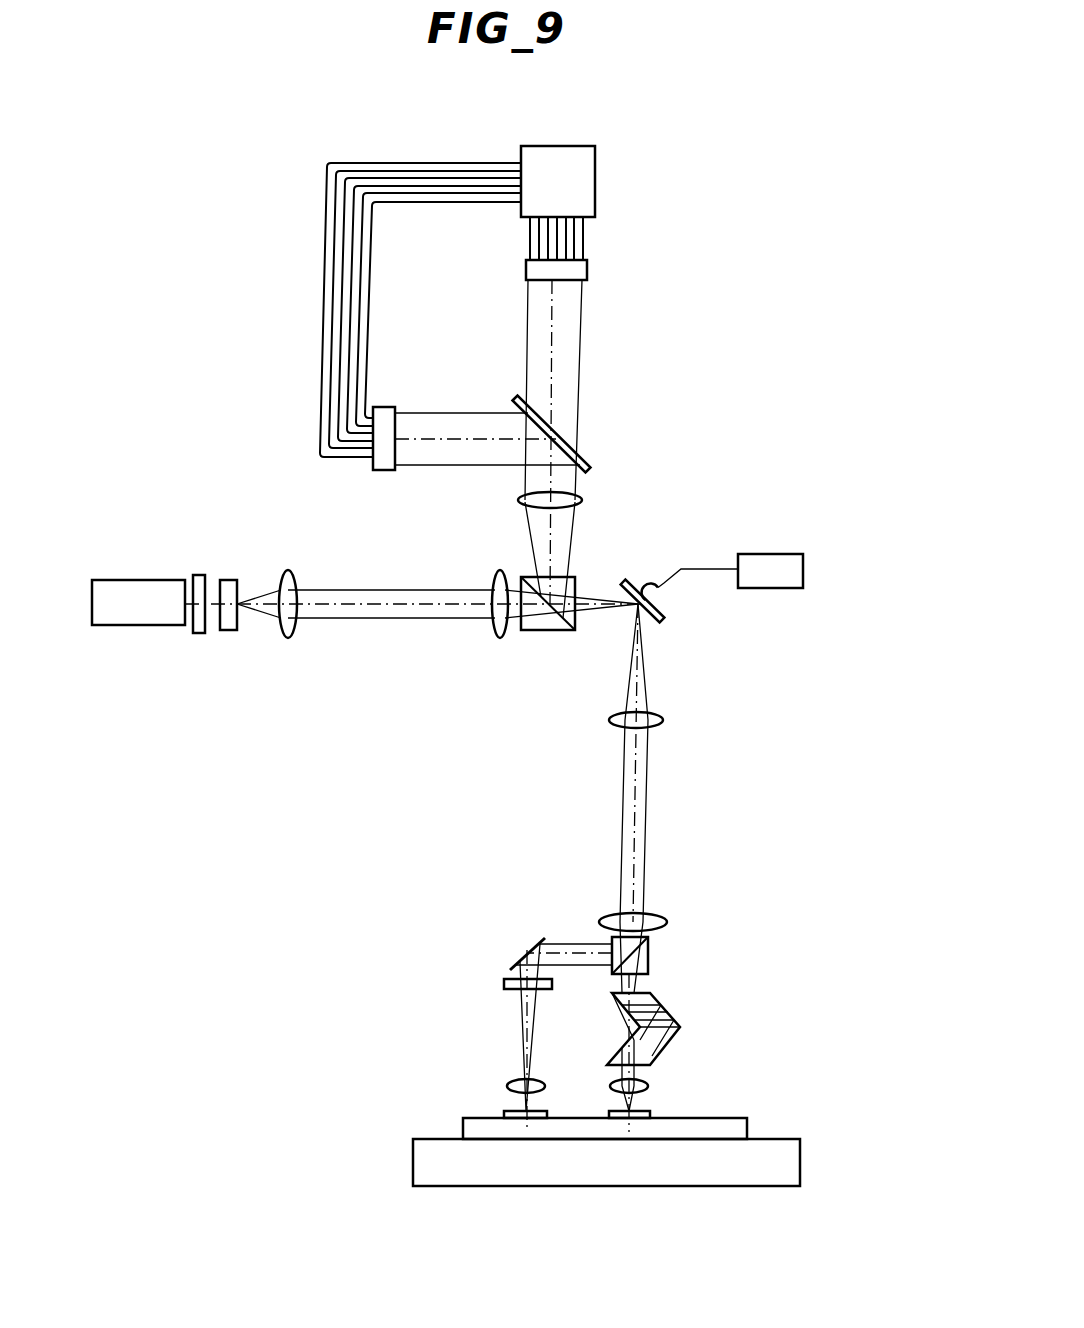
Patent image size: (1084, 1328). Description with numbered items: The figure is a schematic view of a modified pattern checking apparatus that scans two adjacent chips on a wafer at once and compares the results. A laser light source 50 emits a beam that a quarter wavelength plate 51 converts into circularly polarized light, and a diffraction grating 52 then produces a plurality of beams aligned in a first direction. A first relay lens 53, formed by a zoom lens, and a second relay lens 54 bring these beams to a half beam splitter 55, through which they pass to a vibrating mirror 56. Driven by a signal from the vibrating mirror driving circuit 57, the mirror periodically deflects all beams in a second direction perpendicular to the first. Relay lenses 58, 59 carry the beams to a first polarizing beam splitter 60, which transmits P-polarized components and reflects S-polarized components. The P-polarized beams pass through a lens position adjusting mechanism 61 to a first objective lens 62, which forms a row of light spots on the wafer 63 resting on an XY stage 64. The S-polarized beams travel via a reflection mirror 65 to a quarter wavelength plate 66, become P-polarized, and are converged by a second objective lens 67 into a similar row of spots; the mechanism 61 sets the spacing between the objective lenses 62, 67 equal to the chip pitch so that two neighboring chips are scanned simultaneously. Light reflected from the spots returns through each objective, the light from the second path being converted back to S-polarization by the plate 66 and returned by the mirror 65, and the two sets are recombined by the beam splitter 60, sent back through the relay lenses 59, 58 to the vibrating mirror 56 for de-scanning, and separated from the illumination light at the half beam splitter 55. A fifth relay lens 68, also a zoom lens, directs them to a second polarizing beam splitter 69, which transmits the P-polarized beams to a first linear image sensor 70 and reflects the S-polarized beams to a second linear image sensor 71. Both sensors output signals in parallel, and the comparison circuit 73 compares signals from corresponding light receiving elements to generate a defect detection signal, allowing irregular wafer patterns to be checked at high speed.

The laser light source 50 is at (138, 580).
The quarter wavelength plate 51 is at (199, 575).
The diffraction grating 52 is at (229, 580).
The first relay lens 53 is at (288, 570).
The second relay lens 54 is at (500, 571).
The half beam splitter 55 is at (577, 577).
The vibrating mirror 56 is at (630, 582).
The vibrating mirror driving circuit 57 is at (757, 554).
The relay lens 58 is at (663, 718).
The relay lens 59 is at (656, 916).
The first polarizing beam splitter 60 is at (648, 957).
The lens position adjusting mechanism 61 is at (660, 996).
The first objective lens 62 is at (649, 1086).
The wafer 63 is at (742, 1118).
The XY stage 64 is at (790, 1139).
The reflection mirror 65 is at (543, 940).
The quarter wavelength plate 66 is at (504, 984).
The second objective lens 67 is at (507, 1086).
The fifth relay lens 68 is at (582, 500).
The second polarizing beam splitter 69 is at (590, 462).
The first linear image sensor 70 is at (587, 268).
The second linear image sensor 71 is at (373, 468).
The comparison circuit 73 is at (585, 146).